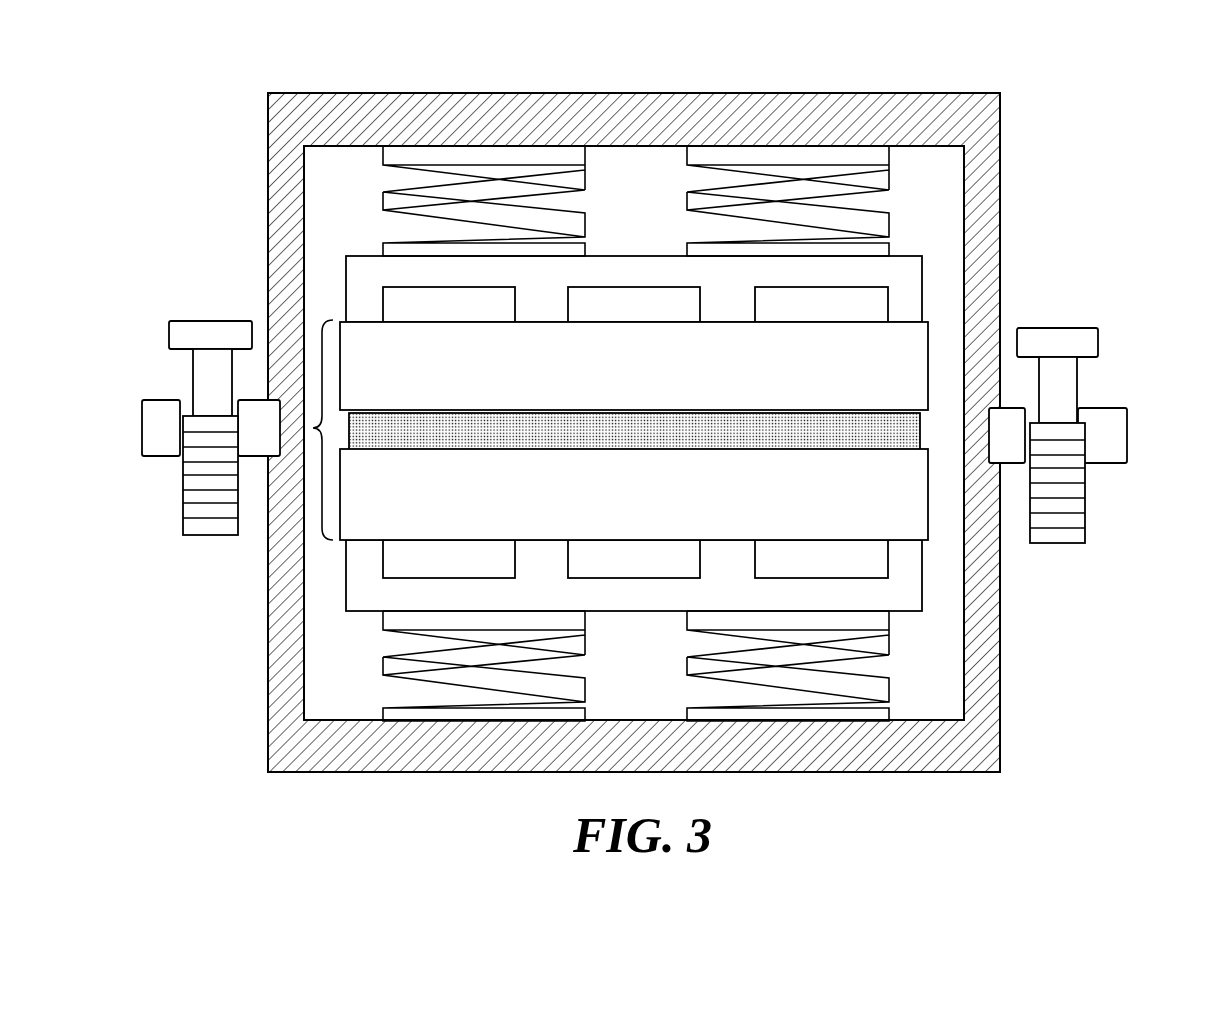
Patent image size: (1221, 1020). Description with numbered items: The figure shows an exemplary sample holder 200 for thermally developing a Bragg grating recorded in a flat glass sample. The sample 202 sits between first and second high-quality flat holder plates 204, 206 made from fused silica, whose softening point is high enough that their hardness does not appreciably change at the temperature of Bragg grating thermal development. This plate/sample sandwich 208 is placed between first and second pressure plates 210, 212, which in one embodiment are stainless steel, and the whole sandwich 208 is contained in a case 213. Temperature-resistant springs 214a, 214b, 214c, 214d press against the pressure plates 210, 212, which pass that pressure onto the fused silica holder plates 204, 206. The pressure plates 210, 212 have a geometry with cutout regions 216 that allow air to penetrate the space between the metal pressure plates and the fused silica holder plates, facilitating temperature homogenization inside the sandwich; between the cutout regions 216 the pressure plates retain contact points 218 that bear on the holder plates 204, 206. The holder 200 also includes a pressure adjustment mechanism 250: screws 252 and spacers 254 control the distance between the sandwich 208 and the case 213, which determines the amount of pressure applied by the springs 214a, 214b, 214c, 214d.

The sample holder 200 is at (653, 405).
The sample 202 is at (456, 442).
The first holder plate 204 is at (456, 384).
The second holder plate 206 is at (456, 504).
The plate/sample sandwich 208 is at (313, 428).
The first pressure plate 210 is at (720, 180).
The second pressure plate 212 is at (897, 595).
The case 213 is at (853, 93).
The temperature-resistant spring 214a is at (885, 179).
The temperature-resistant spring 214b is at (385, 193).
The temperature-resistant spring 214c is at (392, 662).
The temperature-resistant spring 214d is at (873, 688).
The cutout regions 216 is at (472, 317).
The contact points 218 is at (725, 300).
The pressure adjustment mechanism 250 is at (1085, 519).
The screws 252 is at (1065, 387).
The spacers 254 is at (1112, 445).